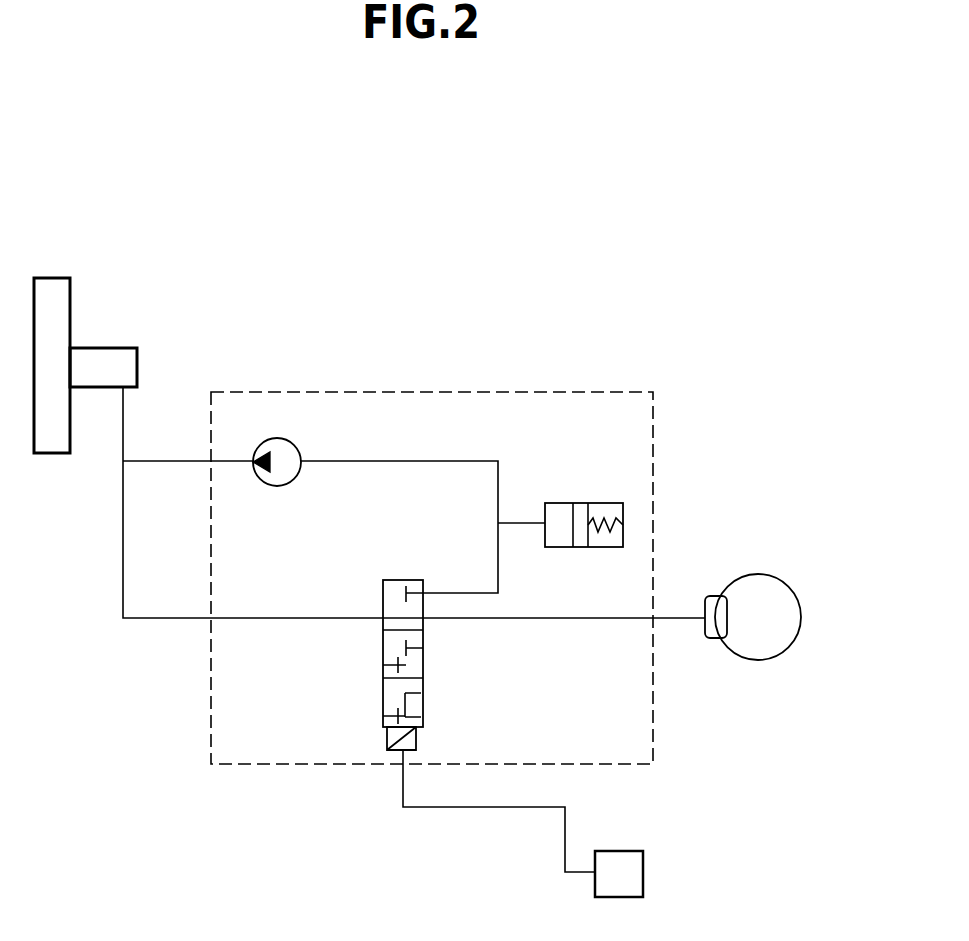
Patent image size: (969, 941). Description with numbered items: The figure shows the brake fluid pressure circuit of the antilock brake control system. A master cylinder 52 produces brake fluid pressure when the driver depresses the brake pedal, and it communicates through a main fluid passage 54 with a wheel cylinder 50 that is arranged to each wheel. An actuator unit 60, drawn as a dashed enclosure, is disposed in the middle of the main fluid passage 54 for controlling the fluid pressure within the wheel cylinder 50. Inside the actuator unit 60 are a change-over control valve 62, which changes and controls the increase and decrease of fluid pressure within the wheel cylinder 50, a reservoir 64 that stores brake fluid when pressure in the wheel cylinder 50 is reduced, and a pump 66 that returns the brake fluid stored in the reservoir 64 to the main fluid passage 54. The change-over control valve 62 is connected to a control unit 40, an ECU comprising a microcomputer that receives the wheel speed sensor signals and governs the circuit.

The control unit 40 is at (643, 866).
The wheel cylinder 50 is at (728, 622).
The master cylinder 52 is at (118, 347).
The main fluid passage 54 is at (168, 620).
The actuator unit 60 is at (260, 766).
The change-over control valve 62 is at (430, 664).
The reservoir 64 is at (597, 503).
The pump 66 is at (296, 446).